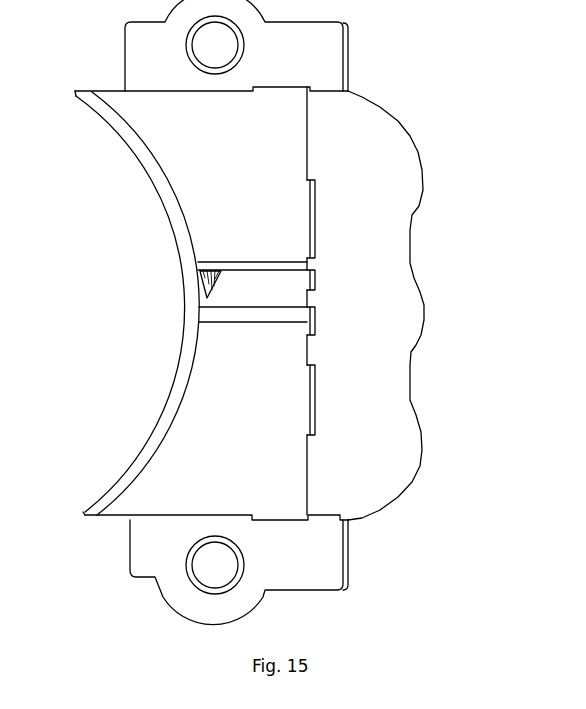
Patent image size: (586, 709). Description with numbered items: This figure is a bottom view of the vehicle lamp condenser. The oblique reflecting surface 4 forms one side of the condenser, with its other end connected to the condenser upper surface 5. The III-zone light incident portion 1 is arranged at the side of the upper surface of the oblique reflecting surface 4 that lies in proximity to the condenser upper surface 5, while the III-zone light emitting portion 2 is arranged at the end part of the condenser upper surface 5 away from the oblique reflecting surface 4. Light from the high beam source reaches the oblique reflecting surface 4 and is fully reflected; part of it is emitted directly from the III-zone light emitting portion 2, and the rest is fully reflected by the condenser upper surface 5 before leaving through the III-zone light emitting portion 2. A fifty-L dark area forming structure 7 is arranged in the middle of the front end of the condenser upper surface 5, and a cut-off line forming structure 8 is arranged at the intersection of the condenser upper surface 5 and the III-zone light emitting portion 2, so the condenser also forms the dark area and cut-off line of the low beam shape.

The III-zone light incident portion 1 is at (315, 230).
The III-zone light emitting portion 2 is at (185, 360).
The oblique reflecting surface 4 is at (372, 326).
The condenser upper surface 5 is at (270, 160).
The 50 L dark area forming structure 7 is at (203, 280).
The cut-off line forming structure 8 is at (185, 228).